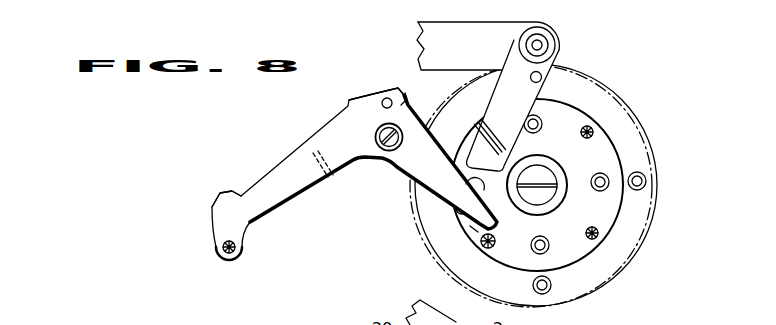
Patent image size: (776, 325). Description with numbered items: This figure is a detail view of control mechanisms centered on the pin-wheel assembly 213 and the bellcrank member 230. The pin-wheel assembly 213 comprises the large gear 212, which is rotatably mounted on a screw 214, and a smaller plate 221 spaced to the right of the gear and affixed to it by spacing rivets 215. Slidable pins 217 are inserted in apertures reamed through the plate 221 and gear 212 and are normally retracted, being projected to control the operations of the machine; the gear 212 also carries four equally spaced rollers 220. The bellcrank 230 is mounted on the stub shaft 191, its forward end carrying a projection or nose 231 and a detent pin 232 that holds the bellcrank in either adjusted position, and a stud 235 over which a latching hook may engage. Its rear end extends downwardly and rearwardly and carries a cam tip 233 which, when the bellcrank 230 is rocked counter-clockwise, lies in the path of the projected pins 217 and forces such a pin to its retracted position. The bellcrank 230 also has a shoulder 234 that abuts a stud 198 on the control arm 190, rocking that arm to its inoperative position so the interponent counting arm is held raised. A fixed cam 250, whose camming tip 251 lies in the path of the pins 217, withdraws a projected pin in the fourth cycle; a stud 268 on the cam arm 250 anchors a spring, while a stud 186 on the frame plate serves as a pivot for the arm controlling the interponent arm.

The stud 186 is at (514, 96).
The stud 268 is at (542, 76).
The plate 221 is at (572, 113).
The pin-wheel assembly 213 is at (567, 185).
The slidable pins 217 is at (603, 181).
The screw 214 is at (541, 198).
The large gear 212 is at (636, 247).
The spacing rivets 215 is at (593, 242).
The rollers 220 is at (550, 290).
The detent pin 232 is at (243, 247).
The projection or nose 231 is at (224, 193).
The stub shaft 191 is at (384, 150).
The bellcrank member 230 is at (403, 186).
The stud 235 is at (433, 239).
The cam tip 233 is at (478, 232).
The shoulder 234 is at (405, 103).
The stud 198 is at (385, 99).
The control arm 190 is at (397, 90).
The fixed cam 250 is at (519, 107).
The camming tip 251 is at (486, 148).